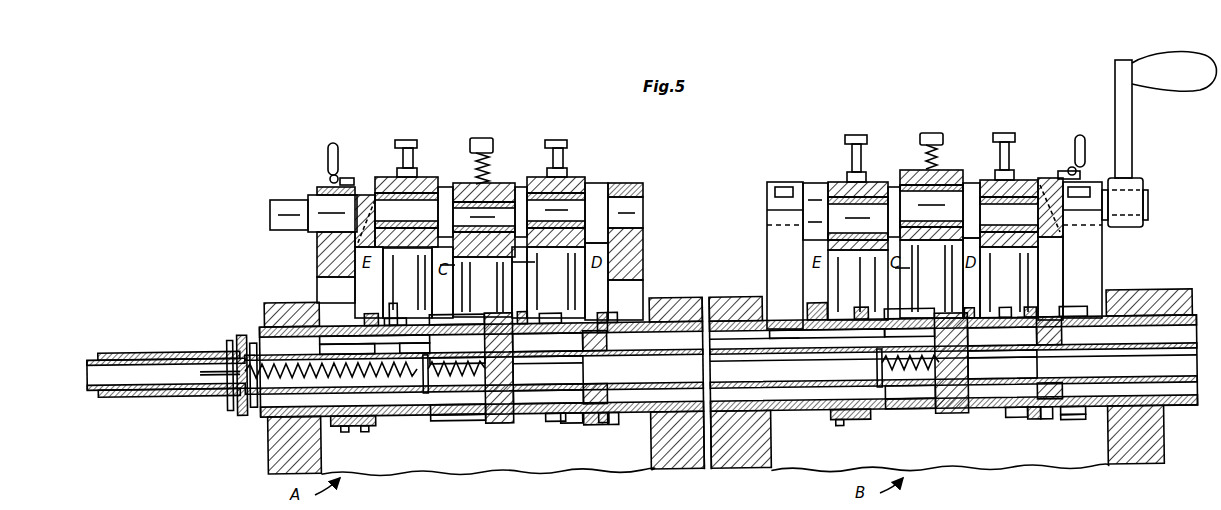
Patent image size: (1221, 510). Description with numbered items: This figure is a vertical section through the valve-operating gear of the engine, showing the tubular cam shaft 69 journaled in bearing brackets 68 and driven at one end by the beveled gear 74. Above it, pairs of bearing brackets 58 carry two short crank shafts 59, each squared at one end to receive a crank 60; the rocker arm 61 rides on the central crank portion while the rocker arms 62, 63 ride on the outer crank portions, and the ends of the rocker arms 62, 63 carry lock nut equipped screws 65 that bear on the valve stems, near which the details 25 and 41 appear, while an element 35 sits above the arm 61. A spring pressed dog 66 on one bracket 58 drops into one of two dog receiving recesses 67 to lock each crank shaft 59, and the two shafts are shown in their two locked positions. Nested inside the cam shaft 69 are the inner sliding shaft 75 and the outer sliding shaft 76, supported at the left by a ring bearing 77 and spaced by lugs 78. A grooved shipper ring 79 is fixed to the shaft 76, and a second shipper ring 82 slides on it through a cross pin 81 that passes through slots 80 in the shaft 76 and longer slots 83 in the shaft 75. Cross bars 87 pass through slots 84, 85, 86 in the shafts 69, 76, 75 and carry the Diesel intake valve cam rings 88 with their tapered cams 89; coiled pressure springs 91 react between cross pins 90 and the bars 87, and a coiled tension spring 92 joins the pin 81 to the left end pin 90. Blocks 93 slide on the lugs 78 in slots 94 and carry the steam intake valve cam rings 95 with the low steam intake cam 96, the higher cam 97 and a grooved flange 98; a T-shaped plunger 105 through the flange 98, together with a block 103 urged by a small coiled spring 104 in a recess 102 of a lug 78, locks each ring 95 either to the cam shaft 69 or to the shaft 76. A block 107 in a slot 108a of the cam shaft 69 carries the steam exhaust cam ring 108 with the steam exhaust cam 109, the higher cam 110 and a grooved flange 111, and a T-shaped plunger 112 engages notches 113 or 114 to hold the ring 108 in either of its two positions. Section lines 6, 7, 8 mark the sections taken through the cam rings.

The cylinder section line 6 is at (418, 283).
The cylinder section line 7 is at (498, 290).
The cylinder section line 8 is at (572, 290).
The piston rod 25 is at (676, 276).
The adjusting screw 35 is at (492, 150).
The piston rod 41 is at (1038, 256).
The bearing brackets 58 is at (325, 255).
The crank shaft 59 is at (625, 213).
The crank 60 is at (1132, 120).
The rocker arm 61 is at (492, 185).
The rocker arm 62 is at (410, 177).
The rocker arm 63 is at (575, 178).
The lock nut equipped screw 65 is at (406, 140).
The spring pressed dog 66 is at (375, 160).
The dog receiving recesses 67 is at (420, 211).
The bearing brackets 68 is at (275, 462).
The tubular cam shaft 69 is at (670, 298).
The beveled gear 74 is at (1185, 300).
The inner sliding shaft 75 is at (760, 350).
The outer sliding shaft 76 is at (775, 345).
The ring bearing 77 is at (268, 306).
The lugs 78 is at (610, 344).
The grooved shipper ring 79 is at (253, 405).
The longitudinal slots 80 is at (185, 348).
The cross pin 81 is at (240, 390).
The second grooved shipper ring 82 is at (228, 345).
The longitudinal slots 83 is at (150, 360).
The slots 84 is at (460, 312).
The slots 85 is at (683, 365).
The slots 86 is at (775, 367).
The cross bars 87 is at (505, 420).
The Diesel intake valve cam rings 88 is at (490, 422).
The Diesel intake valve cams 89 is at (522, 310).
The cross pins 90 is at (428, 385).
The coiled pressure springs 91 is at (440, 385).
The coiled tension spring 92 is at (217, 372).
The blocks 93 is at (841, 371).
The slots 94 is at (540, 428).
The steam intake valve cam rings 95 is at (598, 425).
The steam intake cam 96 is at (600, 312).
The cam 97 is at (570, 422).
The grooved flange 98 is at (842, 439).
The recess 102 is at (595, 352).
The block 103 is at (775, 337).
The small coiled spring 104 is at (780, 368).
The T-shaped plunger 105 is at (625, 305).
The block 107 is at (370, 310).
The steam exhaust cam ring 108 is at (380, 420).
The slot 108a is at (601, 326).
The steam exhaust cam 109 is at (445, 420).
The cam 110 is at (368, 428).
The grooved flange 111 is at (592, 438).
The T-shaped plunger 112 is at (815, 308).
The notches 113 is at (419, 344).
The notches 114 is at (355, 344).